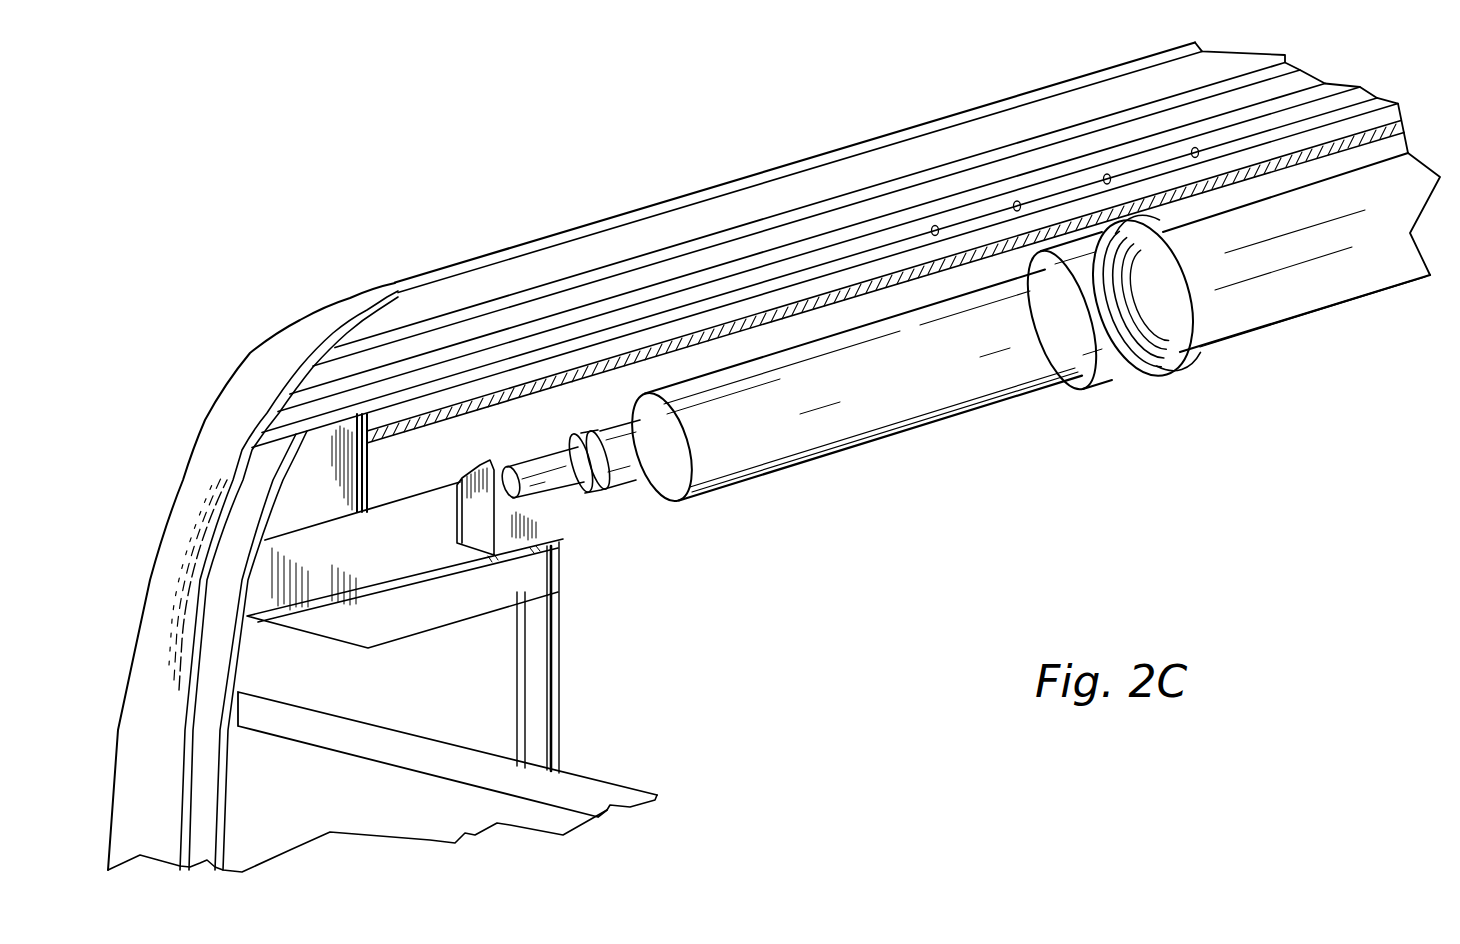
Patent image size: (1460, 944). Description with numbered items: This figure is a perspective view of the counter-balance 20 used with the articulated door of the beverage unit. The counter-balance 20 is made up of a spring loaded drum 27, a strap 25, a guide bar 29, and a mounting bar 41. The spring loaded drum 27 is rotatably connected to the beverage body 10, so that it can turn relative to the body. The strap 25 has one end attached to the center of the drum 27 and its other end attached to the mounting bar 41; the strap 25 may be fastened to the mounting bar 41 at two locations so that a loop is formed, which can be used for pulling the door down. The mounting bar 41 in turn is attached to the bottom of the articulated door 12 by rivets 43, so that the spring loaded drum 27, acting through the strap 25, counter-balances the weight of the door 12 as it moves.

The beverage body 10 is at (222, 282).
The articulated door 12 is at (1097, 140).
The counter-balance 20 is at (1293, 360).
The strap 25 is at (1097, 362).
The spring loaded drum 27 is at (838, 410).
The guide bar 29 is at (512, 400).
The mounting bar 41 is at (1245, 152).
The rivets 43 is at (1016, 201).